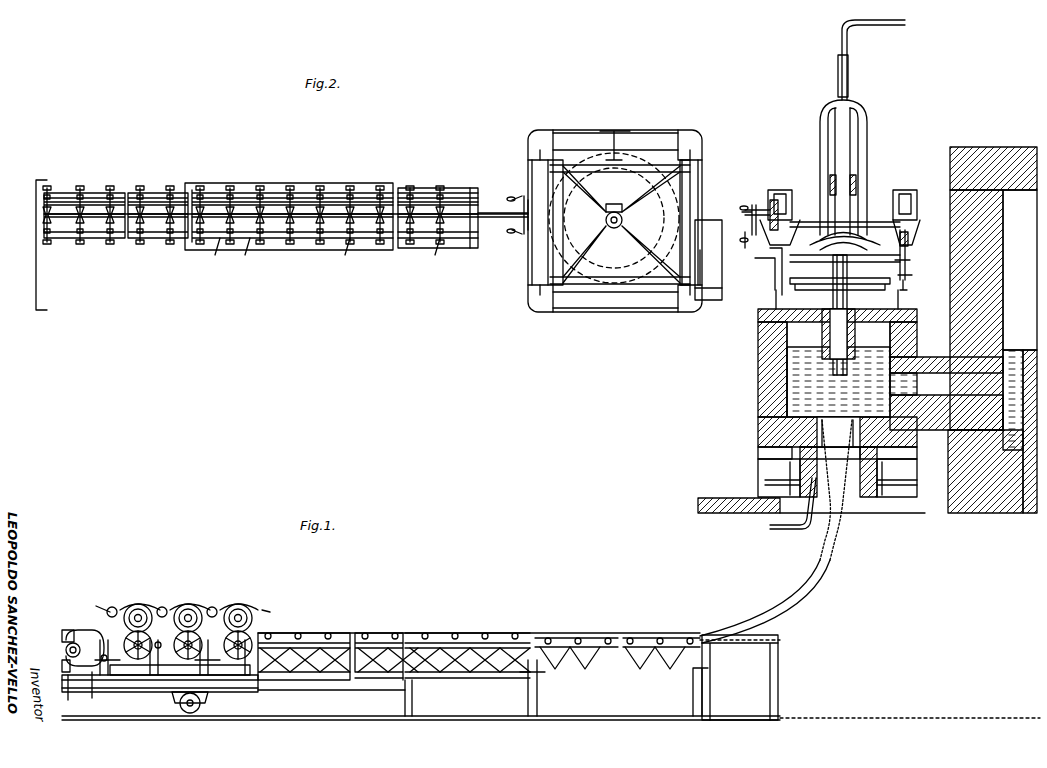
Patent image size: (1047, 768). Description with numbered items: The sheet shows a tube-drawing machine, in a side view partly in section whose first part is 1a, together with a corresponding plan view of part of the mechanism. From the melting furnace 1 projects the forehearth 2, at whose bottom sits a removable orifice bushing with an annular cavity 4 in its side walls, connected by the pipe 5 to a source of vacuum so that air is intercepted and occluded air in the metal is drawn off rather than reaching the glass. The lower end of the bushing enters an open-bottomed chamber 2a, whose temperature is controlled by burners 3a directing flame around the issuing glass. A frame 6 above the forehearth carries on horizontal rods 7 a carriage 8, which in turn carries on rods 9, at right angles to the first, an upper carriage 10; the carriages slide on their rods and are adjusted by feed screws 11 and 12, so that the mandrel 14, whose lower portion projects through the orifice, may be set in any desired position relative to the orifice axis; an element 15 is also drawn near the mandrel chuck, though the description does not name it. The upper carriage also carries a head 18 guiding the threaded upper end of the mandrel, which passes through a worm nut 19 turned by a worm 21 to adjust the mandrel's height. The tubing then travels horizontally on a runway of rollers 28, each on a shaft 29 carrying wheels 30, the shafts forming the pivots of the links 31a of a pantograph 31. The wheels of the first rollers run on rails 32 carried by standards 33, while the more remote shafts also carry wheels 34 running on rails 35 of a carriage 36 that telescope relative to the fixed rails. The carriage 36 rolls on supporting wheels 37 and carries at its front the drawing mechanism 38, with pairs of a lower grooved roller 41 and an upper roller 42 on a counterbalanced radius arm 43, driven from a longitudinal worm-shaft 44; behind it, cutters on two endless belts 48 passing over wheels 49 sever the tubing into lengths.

In FIG. 2, the melting furnace 1 is at (705, 238).
In FIG. 1, the first part of Figure 1 1a is at (551, 646).
In FIG. 1, the forehearth 2 is at (867, 330).
In FIG. 2, the chamber 2a is at (286, 178).
In FIG. 1, the chamber 2a is at (852, 495).
In FIG. 1, the burners 3a is at (790, 468).
In FIG. 1, the annular cavity 4 is at (760, 440).
In FIG. 1, the pipe 5 is at (790, 529).
In FIG. 2, the frame 6 is at (684, 145).
In FIG. 1, the frame 6 is at (774, 300).
In FIG. 2, the horizontal rods 7 is at (533, 158).
In FIG. 1, the carriage 8 is at (768, 282).
In FIG. 2, the rods 9 is at (578, 167).
In FIG. 1, the rods 9 is at (912, 236).
In FIG. 2, the upper carriage 10 is at (558, 165).
In FIG. 2, the feed screw 11 is at (622, 152).
In FIG. 2, the feed screw 12 is at (521, 236).
In FIG. 1, the mandrel 14 is at (850, 300).
In FIG. 1, the disc 15 is at (820, 292).
In FIG. 1, the head 18 is at (862, 153).
In FIG. 1, the worm nut 19 is at (866, 228).
In FIG. 2, the worm 21 is at (616, 210).
In FIG. 2, the rollers 28 is at (440, 224).
In FIG. 1, the rollers 28 is at (540, 640).
In FIG. 2, the shaft 29 is at (420, 250).
In FIG. 2, the wheels 30 is at (366, 250).
In FIG. 2, the pantograph 31 is at (330, 203).
In FIG. 1, the pantograph 31 is at (596, 668).
In FIG. 2, the links 31a is at (463, 198).
In FIG. 1, the links 31a is at (645, 668).
In FIG. 2, the rails 32 is at (245, 188).
In FIG. 1, the rails 32 is at (700, 650).
In FIG. 1, the standards 33 is at (538, 698).
In FIG. 2, the wheels 34 is at (244, 252).
In FIG. 2, the rails 35 is at (158, 197).
In FIG. 1, the rails 35 is at (388, 645).
In FIG. 2, the carriage 36 is at (103, 195).
In FIG. 1, the carriage 36 is at (260, 690).
In FIG. 1, the supporting wheels 37 is at (195, 710).
In FIG. 1, the drawing mechanism 38 is at (166, 625).
In FIG. 1, the lower grooved roller 41 is at (140, 660).
In FIG. 1, the upper roller 42 is at (136, 604).
In FIG. 1, the counterbalanced radius arm 43 is at (190, 604).
In FIG. 1, the longitudinal worm-shaft 44 is at (158, 650).
In FIG. 1, the endless belts 48 is at (90, 630).
In FIG. 1, the wheels 49 is at (104, 648).